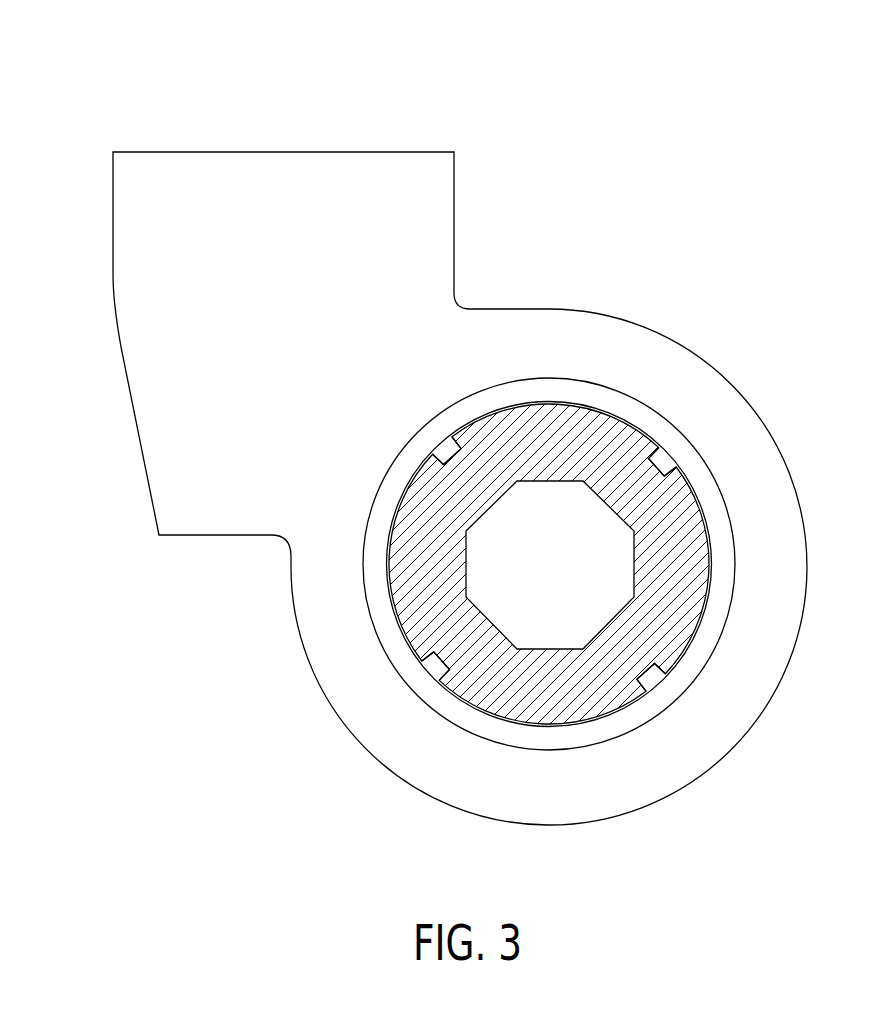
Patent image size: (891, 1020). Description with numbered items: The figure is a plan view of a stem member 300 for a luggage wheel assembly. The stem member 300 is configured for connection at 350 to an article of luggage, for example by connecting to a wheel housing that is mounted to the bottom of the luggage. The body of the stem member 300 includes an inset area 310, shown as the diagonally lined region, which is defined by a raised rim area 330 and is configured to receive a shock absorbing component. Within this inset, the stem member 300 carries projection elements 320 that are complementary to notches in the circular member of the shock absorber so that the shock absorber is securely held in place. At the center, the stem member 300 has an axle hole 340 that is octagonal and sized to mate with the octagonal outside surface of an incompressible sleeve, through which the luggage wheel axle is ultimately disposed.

The stem member 300 is at (487, 529).
The inset area 310 is at (678, 556).
The projection elements 320 is at (665, 461).
The raised rim area 330 is at (627, 720).
The axle hole 340 is at (553, 565).
The connection 350 is at (140, 130).